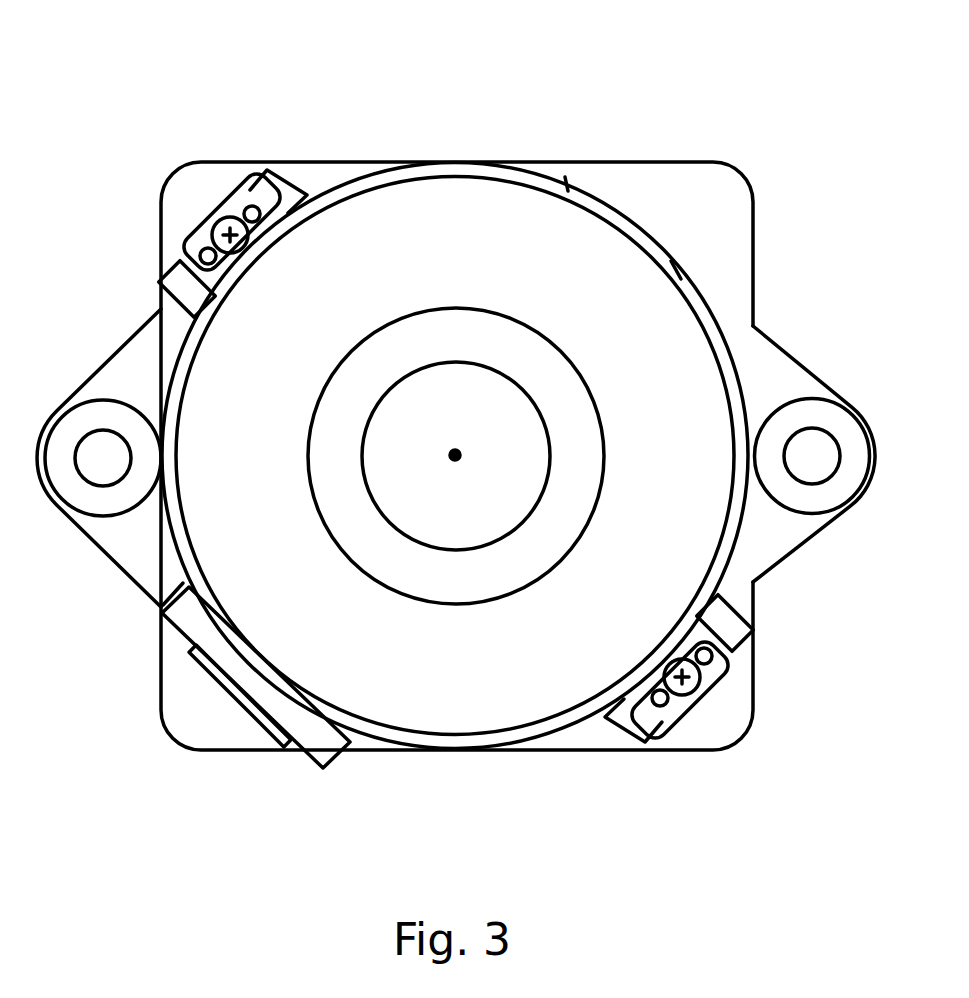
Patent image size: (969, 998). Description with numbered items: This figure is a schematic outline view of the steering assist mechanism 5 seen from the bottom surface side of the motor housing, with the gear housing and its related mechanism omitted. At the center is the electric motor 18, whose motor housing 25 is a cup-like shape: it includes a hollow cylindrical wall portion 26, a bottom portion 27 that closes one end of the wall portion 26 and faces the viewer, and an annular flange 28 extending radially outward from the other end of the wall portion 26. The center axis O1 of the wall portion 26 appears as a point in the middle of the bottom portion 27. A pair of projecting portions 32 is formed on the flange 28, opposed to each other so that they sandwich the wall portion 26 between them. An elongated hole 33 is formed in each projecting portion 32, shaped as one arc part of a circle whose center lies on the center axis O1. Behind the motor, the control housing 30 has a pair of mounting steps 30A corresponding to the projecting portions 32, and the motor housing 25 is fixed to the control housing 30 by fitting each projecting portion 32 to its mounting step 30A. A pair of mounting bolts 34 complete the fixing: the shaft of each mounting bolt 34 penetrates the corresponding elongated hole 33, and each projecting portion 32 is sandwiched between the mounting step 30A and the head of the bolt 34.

The steering assist mechanism 5 is at (633, 110).
The electric motor 18 is at (647, 207).
The motor housing 25 is at (680, 270).
The wall portion 26 is at (570, 190).
The bottom portion 27 is at (490, 690).
The annular flange 28 is at (733, 528).
The control housing 30 is at (214, 158).
The mounting step 30A is at (178, 300).
The projecting portion 32 is at (262, 190).
The elongated hole 33 is at (210, 258).
The mounting bolt 34 is at (220, 222).
The center axis O1 is at (460, 455).